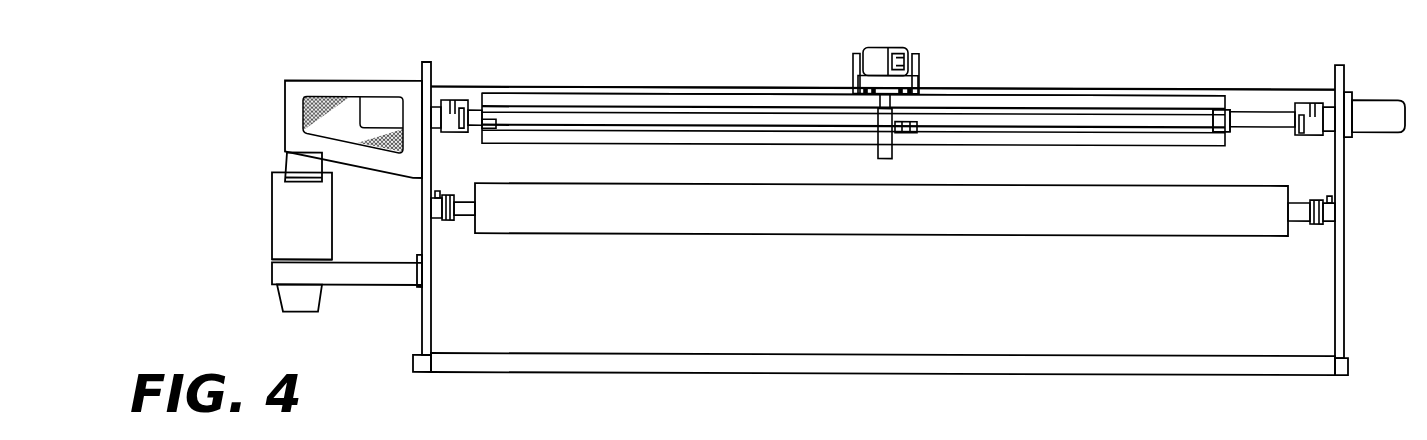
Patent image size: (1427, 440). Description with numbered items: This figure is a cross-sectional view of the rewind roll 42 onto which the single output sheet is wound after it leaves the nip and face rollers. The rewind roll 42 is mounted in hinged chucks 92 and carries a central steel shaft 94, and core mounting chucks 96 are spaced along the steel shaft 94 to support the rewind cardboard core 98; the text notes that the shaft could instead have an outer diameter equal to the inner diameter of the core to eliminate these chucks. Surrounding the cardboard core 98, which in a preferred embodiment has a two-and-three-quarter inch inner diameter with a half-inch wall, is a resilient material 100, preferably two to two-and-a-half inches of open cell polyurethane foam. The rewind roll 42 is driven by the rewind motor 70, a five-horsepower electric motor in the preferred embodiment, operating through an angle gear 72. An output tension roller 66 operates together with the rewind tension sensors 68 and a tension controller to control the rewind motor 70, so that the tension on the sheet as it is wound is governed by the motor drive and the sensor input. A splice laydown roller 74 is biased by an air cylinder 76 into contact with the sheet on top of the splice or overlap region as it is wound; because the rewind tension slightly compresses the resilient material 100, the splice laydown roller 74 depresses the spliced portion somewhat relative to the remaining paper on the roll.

The rewind roll 42 is at (1153, 90).
The output tension roller 66 is at (893, 258).
The rewind tension sensor 68 is at (452, 236).
The rewind motor 70 is at (305, 326).
The angle gear 72 is at (280, 161).
The splice laydown roller 74 is at (899, 43).
The air cylinder 76 is at (876, 153).
The hinged chuck 92 is at (464, 94).
The central steel shaft 94 is at (1252, 125).
The core mounting chuck 96 is at (492, 129).
The rewind cardboard core 98 is at (1078, 106).
The resilient material 100 is at (1007, 90).